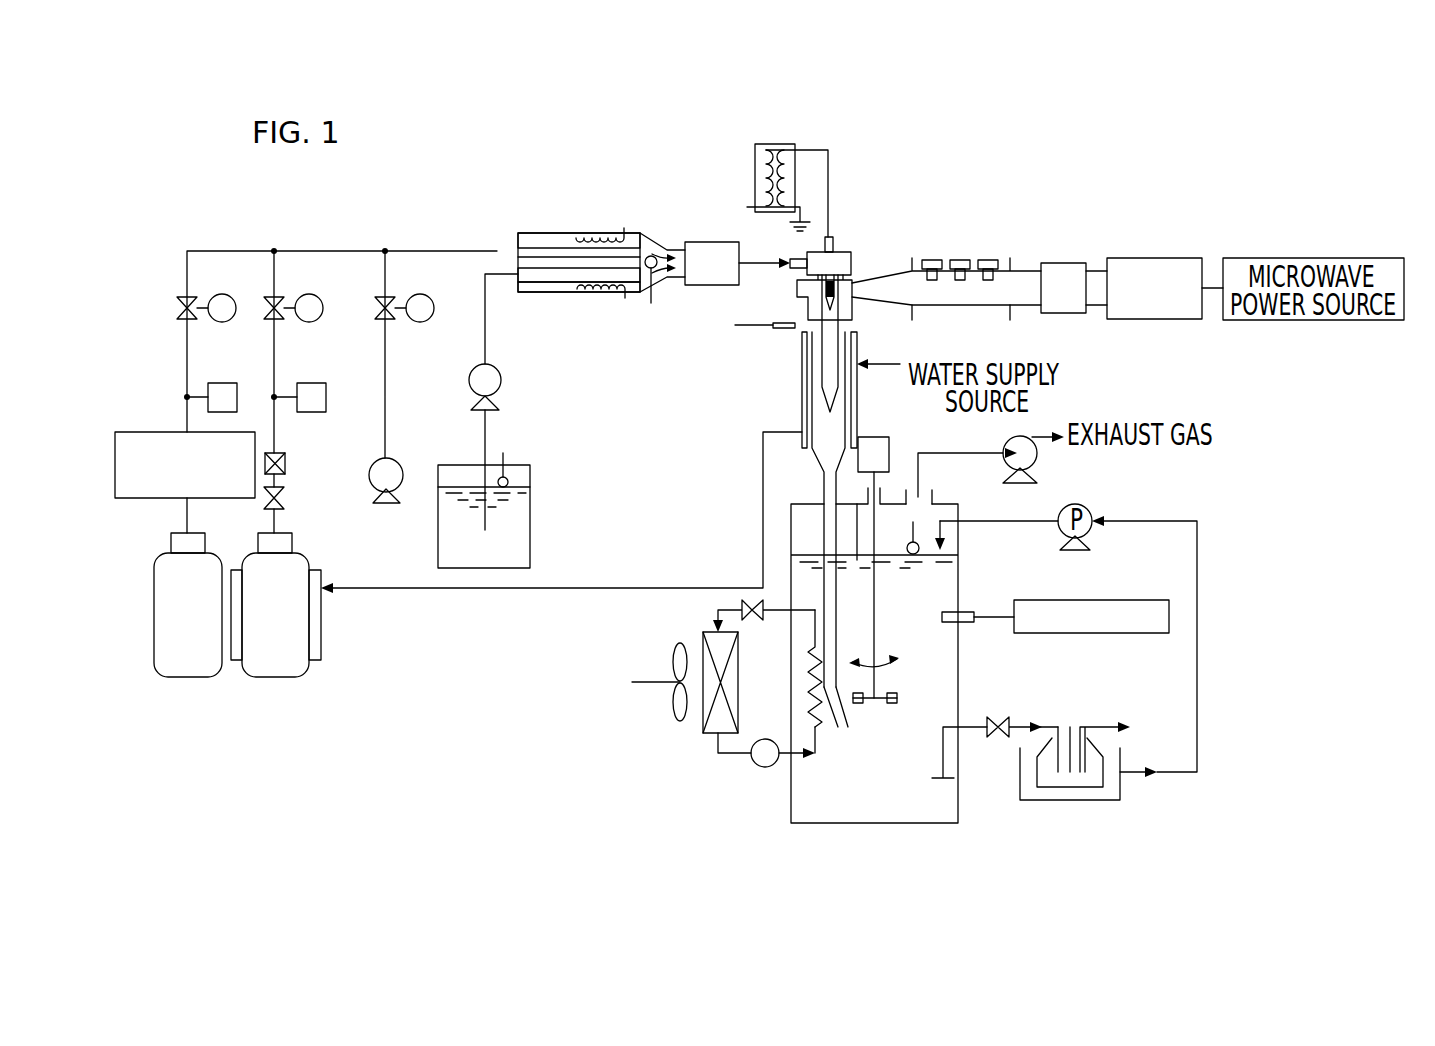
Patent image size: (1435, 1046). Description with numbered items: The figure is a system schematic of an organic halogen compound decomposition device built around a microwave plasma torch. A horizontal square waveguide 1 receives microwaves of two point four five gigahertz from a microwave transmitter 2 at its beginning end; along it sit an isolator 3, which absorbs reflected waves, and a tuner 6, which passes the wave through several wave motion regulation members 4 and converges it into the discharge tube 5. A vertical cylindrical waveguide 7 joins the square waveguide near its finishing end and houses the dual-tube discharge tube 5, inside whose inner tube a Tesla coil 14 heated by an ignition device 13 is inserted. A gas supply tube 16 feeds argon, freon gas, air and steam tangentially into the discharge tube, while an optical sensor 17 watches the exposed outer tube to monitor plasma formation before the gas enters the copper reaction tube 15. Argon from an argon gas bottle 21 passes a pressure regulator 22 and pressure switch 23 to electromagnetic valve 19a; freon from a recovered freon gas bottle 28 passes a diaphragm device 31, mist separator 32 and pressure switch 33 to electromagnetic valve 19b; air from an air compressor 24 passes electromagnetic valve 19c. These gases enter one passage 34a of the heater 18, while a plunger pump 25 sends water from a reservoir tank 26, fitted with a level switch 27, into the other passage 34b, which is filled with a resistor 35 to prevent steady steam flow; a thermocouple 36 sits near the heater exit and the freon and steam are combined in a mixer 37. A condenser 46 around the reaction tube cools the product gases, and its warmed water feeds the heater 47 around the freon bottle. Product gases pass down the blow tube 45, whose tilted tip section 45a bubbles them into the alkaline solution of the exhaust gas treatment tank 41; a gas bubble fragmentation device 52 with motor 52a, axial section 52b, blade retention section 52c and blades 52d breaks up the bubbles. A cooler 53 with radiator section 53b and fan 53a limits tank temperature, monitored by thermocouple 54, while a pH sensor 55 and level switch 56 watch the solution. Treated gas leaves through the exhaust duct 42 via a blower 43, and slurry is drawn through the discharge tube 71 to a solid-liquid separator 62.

The square waveguide 1 is at (1026, 258).
The microwave transmitter 2 is at (1166, 270).
The isolator 3 is at (1070, 262).
The wave motion regulation members 4 is at (963, 260).
The discharge tube 5 is at (840, 308).
The tuner 6 is at (1002, 322).
The cylindrical waveguide 7 is at (797, 289).
The ignition device 13 is at (754, 163).
The Tesla coil 14 is at (829, 165).
The reaction tube 15 is at (838, 422).
The gas supply tube 16 is at (801, 257).
The optical sensor 17 is at (786, 330).
The heater 18 is at (569, 226).
The electromagnetic valve 19a is at (196, 300).
The electromagnetic valve 19b is at (287, 299).
The electromagnetic valve 19c is at (396, 299).
The argon gas bottle 21 is at (214, 557).
The pressure regulator 22 is at (163, 430).
The pressure switch 23 is at (228, 381).
The air compressor 24 is at (399, 458).
The plunger pump 25 is at (501, 378).
The reservoir tank 26 is at (531, 507).
The level switch 27 is at (504, 456).
The recovered freon gas bottle 28 is at (305, 561).
The diaphragm device 31 is at (286, 502).
The mist separator 32 is at (287, 460).
The pressure switch 33 is at (314, 381).
The passage 34a is at (518, 250).
The passage 34b is at (517, 276).
The resistor 35 is at (598, 276).
The thermocouple 36 is at (652, 305).
The mixer 37 is at (722, 241).
The exhaust gas treatment tank 41 is at (826, 826).
The exhaust duct 42 is at (933, 491).
The blower 43 is at (1038, 460).
The blow tube 45 is at (833, 643).
The tip section 45a is at (838, 727).
The condenser 46 is at (802, 395).
The heater 47 is at (321, 633).
The gas bubble fragmentation device 52 is at (901, 681).
The motor 52a is at (890, 448).
The axial section 52b is at (875, 634).
The blade retention section 52c is at (871, 704).
The blades 52d is at (898, 698).
The cooler 53 is at (697, 741).
The fan 53a is at (674, 663).
The radiator section 53b is at (703, 645).
The thermocouple 54 is at (856, 527).
The pH sensor 55 is at (966, 611).
The level switch 56 is at (915, 535).
The solid-liquid separator 62 is at (1075, 806).
The discharge tube 71 is at (944, 766).